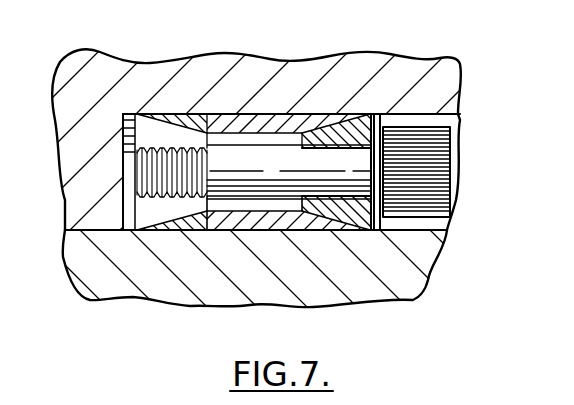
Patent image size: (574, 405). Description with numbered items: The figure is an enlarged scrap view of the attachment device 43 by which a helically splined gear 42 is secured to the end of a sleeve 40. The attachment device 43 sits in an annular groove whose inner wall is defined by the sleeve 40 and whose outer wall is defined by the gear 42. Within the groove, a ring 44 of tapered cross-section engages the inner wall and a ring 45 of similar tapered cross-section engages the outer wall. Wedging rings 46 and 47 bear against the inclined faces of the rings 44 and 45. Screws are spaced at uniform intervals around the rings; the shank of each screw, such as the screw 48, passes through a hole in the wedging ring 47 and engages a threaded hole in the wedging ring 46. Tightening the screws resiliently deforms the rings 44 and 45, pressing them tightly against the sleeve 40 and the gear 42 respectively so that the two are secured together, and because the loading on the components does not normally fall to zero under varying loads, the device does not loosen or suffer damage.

The sleeve 40 is at (363, 282).
The helically splined gear 42 is at (385, 66).
The attachment device 43 is at (276, 113).
The ring of tapered cross-section 44 is at (223, 225).
The ring of tapered cross-section 45 is at (248, 120).
The wedging ring 46 is at (157, 138).
The wedging ring 47 is at (338, 135).
The screw 48 is at (420, 180).